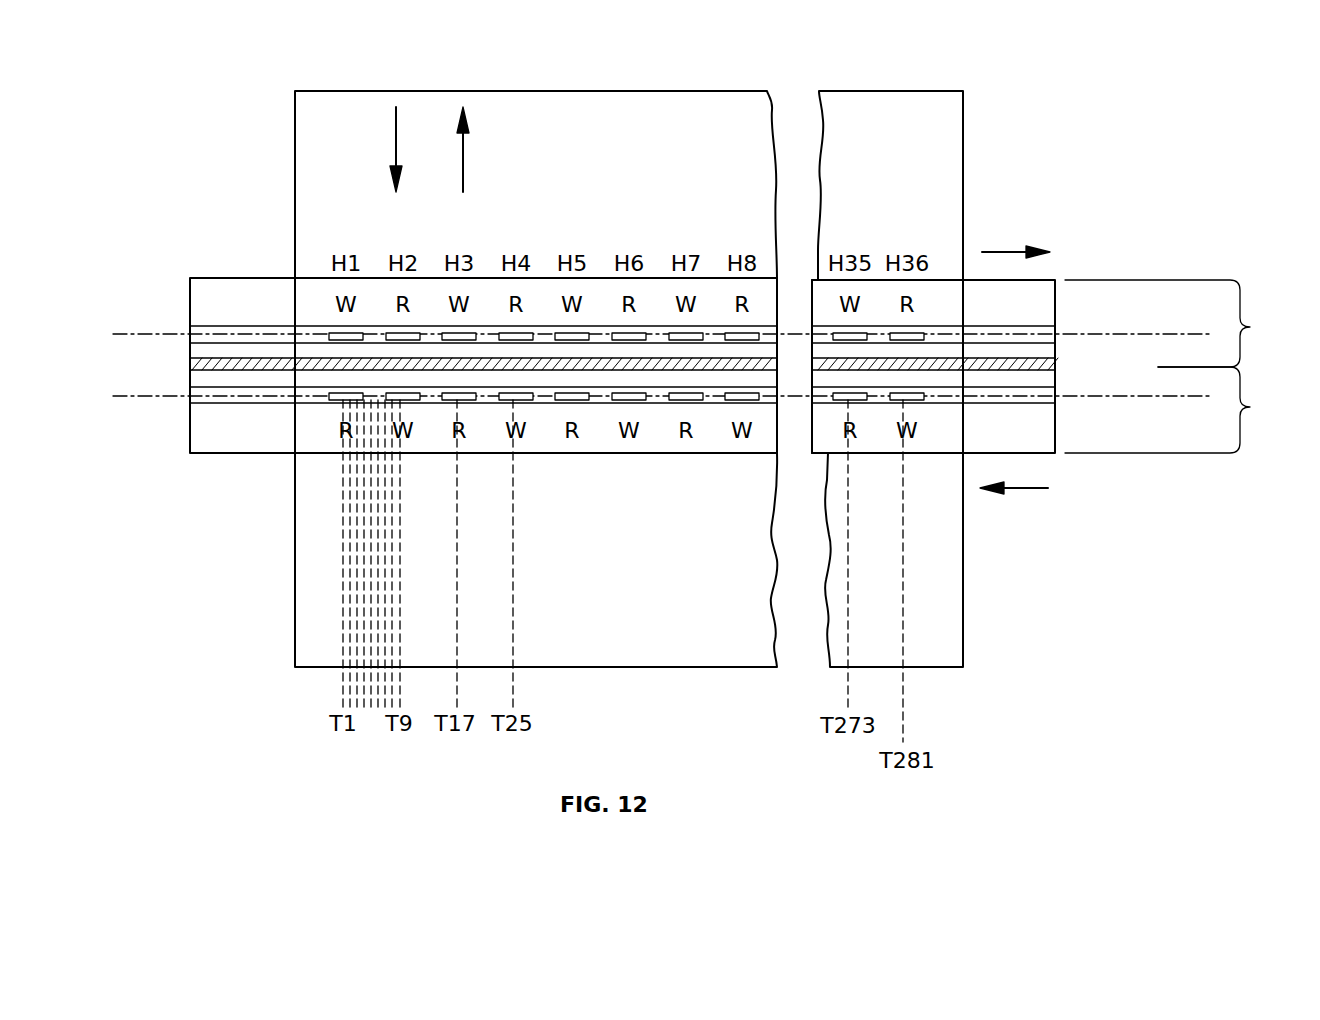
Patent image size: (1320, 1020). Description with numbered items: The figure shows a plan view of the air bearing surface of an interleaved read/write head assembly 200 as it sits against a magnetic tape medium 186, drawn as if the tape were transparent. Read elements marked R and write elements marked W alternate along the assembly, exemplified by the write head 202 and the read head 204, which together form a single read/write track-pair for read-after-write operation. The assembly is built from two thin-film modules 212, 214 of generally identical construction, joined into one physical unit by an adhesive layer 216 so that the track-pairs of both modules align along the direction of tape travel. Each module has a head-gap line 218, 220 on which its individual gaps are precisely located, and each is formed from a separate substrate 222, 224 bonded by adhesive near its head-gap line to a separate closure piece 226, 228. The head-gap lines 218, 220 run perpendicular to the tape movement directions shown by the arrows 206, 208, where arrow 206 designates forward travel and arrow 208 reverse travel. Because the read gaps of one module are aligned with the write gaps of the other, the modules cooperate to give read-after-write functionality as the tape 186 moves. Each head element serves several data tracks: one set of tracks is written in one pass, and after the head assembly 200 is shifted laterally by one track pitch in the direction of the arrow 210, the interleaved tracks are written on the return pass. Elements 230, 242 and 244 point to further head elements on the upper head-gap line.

The magnetic tape medium 186 is at (423, 90).
The read/write head assembly 200 is at (253, 240).
The write head 202 is at (332, 336).
The read head 204 is at (332, 400).
The arrow 206 is at (393, 127).
The arrow 208 is at (465, 155).
The arrow 210 is at (1003, 250).
The thin-film module 212 is at (1182, 323).
The thin-film module 214 is at (1182, 410).
The adhesive layer 216 is at (190, 362).
The head-gap line 218 is at (120, 330).
The head-gap line 220 is at (120, 398).
The substrate 222 is at (1050, 304).
The substrate 224 is at (1050, 426).
The closure piece 226 is at (1050, 352).
The closure piece 228 is at (1050, 380).
The read element of head H4 230 is at (528, 333).
The write element of head H3 242 is at (471, 333).
The write element of head H5 244 is at (585, 333).